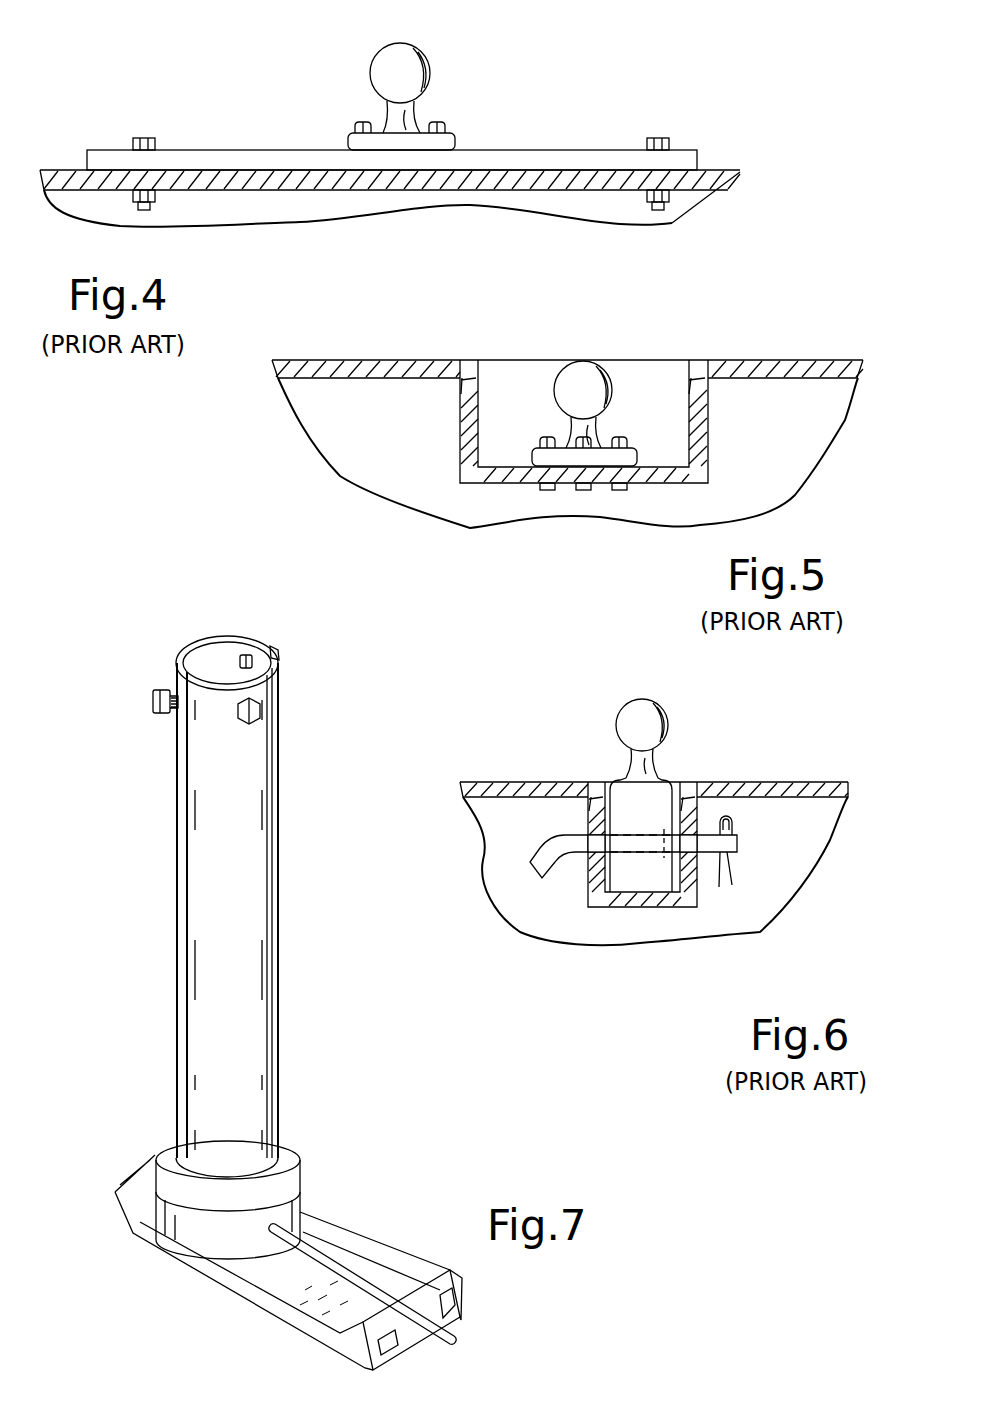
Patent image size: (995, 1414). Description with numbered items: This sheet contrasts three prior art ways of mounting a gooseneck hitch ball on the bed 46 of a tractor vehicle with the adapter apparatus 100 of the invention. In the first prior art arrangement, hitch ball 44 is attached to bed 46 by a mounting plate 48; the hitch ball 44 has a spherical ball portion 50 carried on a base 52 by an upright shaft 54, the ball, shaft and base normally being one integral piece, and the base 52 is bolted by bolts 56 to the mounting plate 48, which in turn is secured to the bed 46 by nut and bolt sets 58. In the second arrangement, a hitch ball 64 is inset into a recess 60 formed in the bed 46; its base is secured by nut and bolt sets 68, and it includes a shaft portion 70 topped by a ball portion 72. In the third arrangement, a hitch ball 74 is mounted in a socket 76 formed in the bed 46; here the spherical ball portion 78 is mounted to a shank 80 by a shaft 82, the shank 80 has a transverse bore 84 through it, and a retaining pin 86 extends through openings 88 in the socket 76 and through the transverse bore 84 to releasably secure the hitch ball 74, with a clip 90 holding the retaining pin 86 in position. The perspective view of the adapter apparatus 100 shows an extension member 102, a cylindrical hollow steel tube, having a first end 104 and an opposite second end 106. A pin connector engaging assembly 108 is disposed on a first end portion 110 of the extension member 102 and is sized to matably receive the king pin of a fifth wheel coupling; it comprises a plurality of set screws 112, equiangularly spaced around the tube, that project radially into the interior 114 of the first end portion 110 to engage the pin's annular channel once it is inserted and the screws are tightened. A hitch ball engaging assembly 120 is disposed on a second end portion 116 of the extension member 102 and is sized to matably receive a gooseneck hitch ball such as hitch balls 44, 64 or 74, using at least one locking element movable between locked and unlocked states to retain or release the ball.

In FIG. 4, the hitch ball 44 is at (428, 78).
In FIG. 4, the bed 46 is at (568, 187).
In FIG. 5, the bed 46 is at (330, 372).
In FIG. 6, the bed 46 is at (527, 790).
In FIG. 4, the mounting plate 48 is at (540, 160).
In FIG. 4, the spherical ball portion 50 is at (400, 73).
In FIG. 4, the base 52 is at (362, 145).
In FIG. 4, the upright shaft 54 is at (403, 115).
In FIG. 4, the bolts 56 is at (360, 125).
In FIG. 4, the nut and bolt sets 58 is at (143, 137).
In FIG. 5, the recess 60 is at (594, 418).
In FIG. 5, the hitch ball 64 is at (633, 383).
In FIG. 5, the nut and bolt sets 68 is at (630, 440).
In FIG. 5, the shaft portion 70 is at (597, 425).
In FIG. 5, the ball portion 72 is at (583, 385).
In FIG. 6, the hitch ball 74 is at (643, 836).
In FIG. 6, the socket 76 is at (642, 907).
In FIG. 6, the spherical ball portion 78 is at (640, 717).
In FIG. 6, the shank 80 is at (655, 875).
In FIG. 6, the shaft 82 is at (628, 770).
In FIG. 6, the transverse bore 84 is at (592, 905).
In FIG. 6, the retaining pin 86 is at (560, 843).
In FIG. 6, the openings 88 is at (590, 868).
In FIG. 6, the clip 90 is at (735, 826).
In FIG. 7, the adapter apparatus 100 is at (255, 958).
In FIG. 7, the extension member 102 is at (227, 852).
In FIG. 7, the first end 104 is at (228, 636).
In FIG. 7, the second end 106 is at (300, 1214).
In FIG. 7, the pin connector engaging assembly 108 is at (227, 684).
In FIG. 7, the first end portion 110 is at (272, 693).
In FIG. 7, the set screws 112 is at (273, 650).
In FIG. 7, the interior 114 is at (205, 660).
In FIG. 7, the second end portion 116 is at (240, 1128).
In FIG. 7, the hitch ball engaging assembly 120 is at (255, 1213).